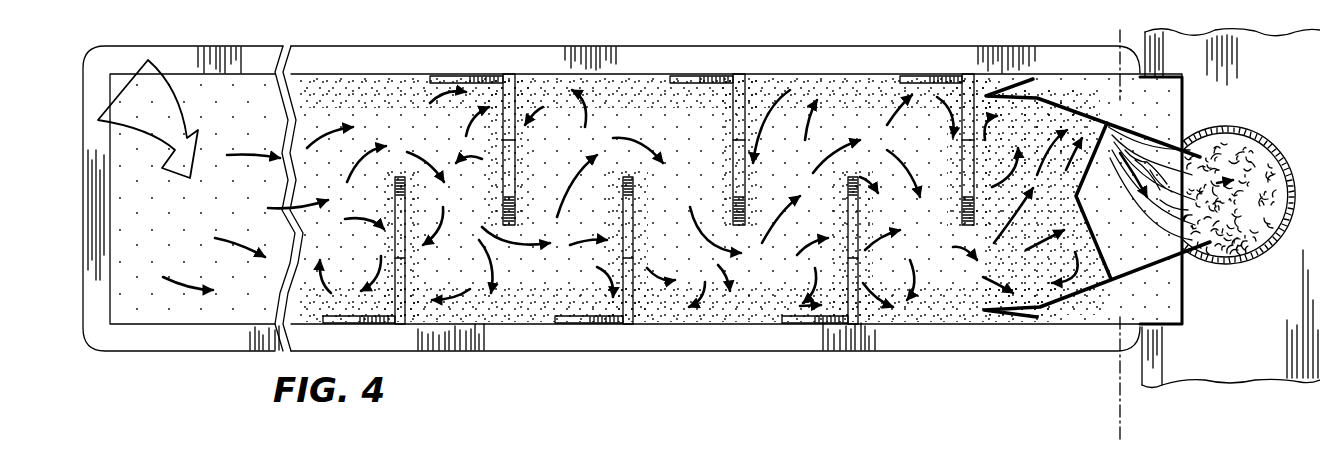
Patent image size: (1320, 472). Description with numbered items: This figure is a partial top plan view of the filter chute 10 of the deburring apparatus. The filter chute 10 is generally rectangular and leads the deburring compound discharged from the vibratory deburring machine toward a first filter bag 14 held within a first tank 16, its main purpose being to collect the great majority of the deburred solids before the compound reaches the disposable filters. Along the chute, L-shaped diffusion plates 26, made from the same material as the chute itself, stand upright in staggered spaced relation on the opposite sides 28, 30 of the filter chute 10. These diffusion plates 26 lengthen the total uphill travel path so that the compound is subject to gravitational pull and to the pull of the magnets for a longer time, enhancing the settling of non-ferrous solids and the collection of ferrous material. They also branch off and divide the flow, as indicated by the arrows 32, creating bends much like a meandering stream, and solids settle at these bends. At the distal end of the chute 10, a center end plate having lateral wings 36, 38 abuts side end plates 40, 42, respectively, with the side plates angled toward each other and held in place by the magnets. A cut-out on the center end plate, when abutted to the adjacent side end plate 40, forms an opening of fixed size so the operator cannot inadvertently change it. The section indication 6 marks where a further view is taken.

The section line 6- 6 is at (1133, 40).
The filter chute 10 is at (880, 357).
The first filter bag 14 is at (1278, 132).
The first tank 16 is at (1260, 352).
The L-shaped diffusion plates 26 is at (515, 117).
The side of the filter chute 28 is at (713, 57).
The side of the filter chute 30 is at (527, 338).
The arrows 32 is at (663, 113).
The lateral wing 36 is at (1112, 122).
The lateral wing 38 is at (1093, 287).
The side end plate 40 is at (1066, 98).
The side end plate 42 is at (1165, 262).